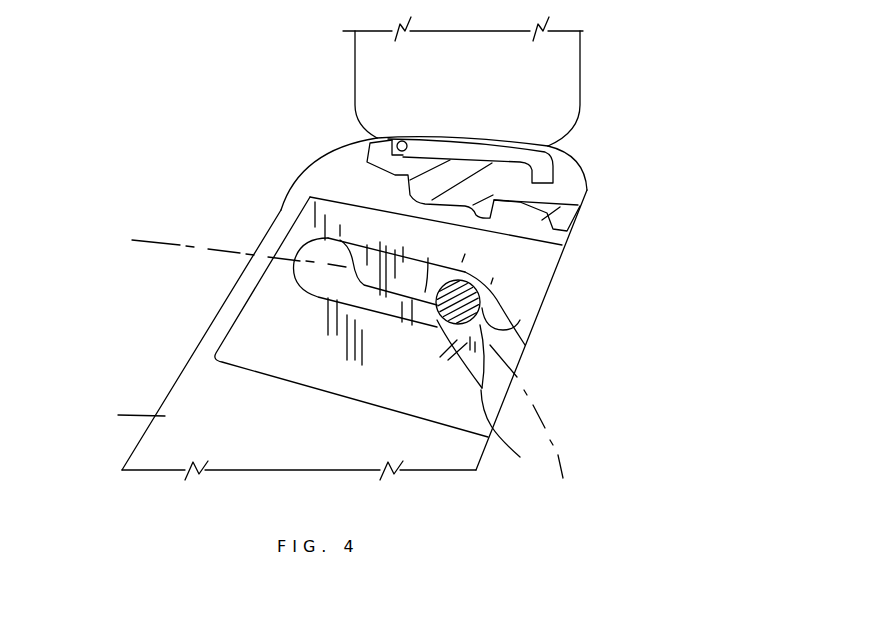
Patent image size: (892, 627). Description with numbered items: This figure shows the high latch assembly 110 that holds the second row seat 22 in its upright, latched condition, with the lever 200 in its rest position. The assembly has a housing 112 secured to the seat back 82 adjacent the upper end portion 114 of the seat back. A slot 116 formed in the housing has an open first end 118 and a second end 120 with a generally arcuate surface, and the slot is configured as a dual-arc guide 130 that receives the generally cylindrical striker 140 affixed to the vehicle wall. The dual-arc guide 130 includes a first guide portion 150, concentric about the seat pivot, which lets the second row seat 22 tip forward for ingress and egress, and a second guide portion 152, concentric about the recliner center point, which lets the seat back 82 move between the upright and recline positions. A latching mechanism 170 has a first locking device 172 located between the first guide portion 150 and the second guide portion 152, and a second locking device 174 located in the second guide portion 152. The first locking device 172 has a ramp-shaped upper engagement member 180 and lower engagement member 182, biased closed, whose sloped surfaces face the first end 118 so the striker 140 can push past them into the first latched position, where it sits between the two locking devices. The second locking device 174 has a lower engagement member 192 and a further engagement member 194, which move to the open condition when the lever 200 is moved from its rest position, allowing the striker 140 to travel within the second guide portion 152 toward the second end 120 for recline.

The second row seat 22 is at (113, 167).
The seat back 82 is at (116, 414).
The high latch assembly 110 is at (580, 392).
The housing 112 is at (545, 278).
The upper end portion 114 is at (325, 176).
The slot 116 is at (512, 353).
The first end 118 is at (504, 441).
The second end 120 is at (290, 272).
The dual-arc guide 130 is at (392, 376).
The striker 140 is at (465, 280).
The first guide portion 150 is at (517, 335).
The second guide portion 152 is at (313, 287).
The latching mechanism 170 is at (372, 342).
The first locking device 172 is at (456, 365).
The second locking device 174 is at (398, 265).
The upper engagement member 180 is at (492, 308).
The lower engagement member 182 is at (468, 362).
The lower engagement member 192 is at (425, 288).
The engagement member 194 is at (372, 329).
The lever 200 is at (448, 142).